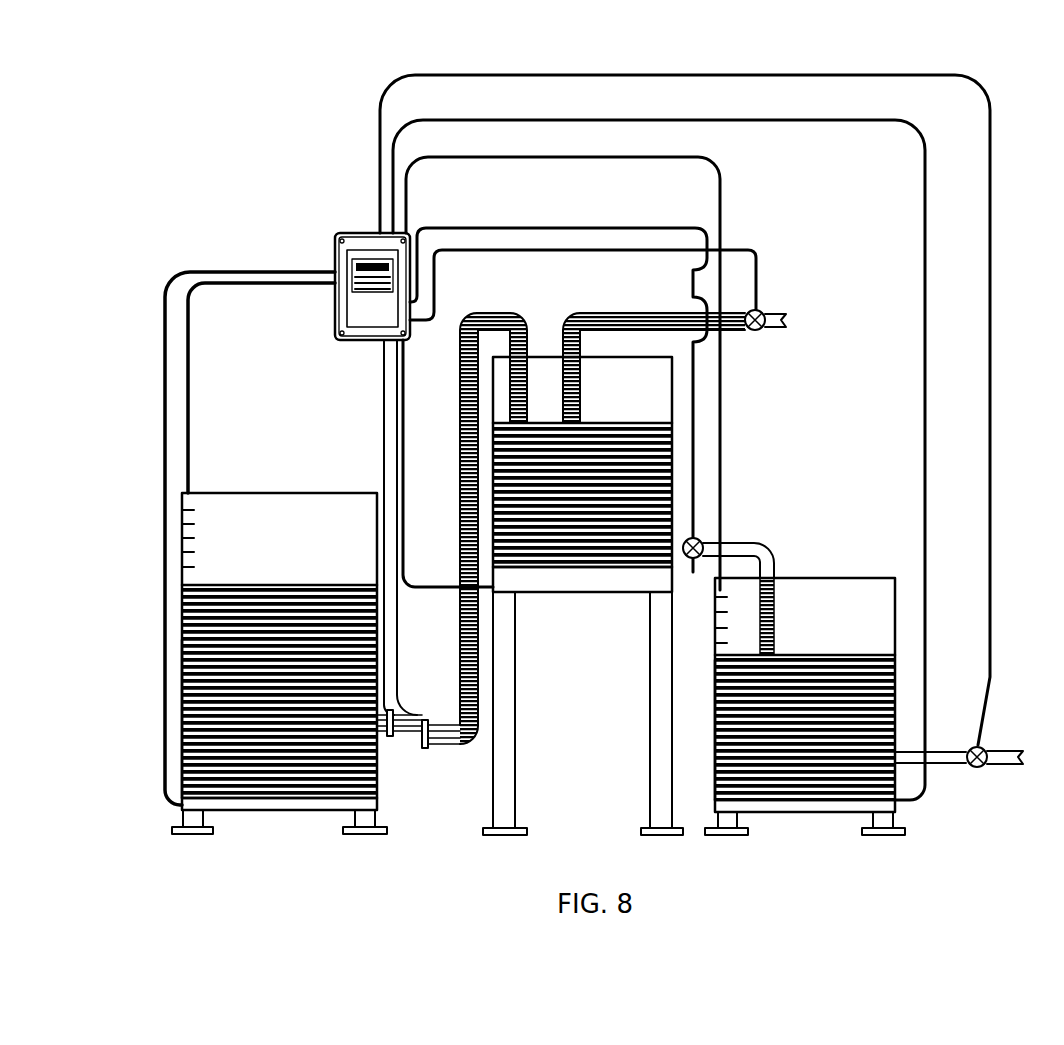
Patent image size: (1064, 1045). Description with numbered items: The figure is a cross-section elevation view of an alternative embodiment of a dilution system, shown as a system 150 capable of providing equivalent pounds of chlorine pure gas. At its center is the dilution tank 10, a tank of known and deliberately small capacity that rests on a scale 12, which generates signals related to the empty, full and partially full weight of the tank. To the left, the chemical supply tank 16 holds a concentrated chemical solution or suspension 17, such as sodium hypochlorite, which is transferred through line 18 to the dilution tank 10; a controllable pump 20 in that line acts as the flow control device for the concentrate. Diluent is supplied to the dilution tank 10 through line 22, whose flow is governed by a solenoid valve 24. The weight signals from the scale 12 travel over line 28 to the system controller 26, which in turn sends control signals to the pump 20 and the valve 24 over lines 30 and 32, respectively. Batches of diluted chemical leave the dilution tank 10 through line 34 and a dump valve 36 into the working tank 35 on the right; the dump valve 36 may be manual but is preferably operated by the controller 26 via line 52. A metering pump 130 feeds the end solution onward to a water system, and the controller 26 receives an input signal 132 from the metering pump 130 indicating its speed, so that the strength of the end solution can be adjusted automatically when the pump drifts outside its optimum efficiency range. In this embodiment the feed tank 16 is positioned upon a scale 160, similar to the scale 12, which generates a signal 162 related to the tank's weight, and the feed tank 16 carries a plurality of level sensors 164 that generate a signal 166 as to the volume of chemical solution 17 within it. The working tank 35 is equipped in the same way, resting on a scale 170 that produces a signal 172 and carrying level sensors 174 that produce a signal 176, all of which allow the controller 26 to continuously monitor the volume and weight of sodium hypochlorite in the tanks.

The dilution tank 10 is at (673, 460).
The scale 12 is at (641, 576).
The chemical supply tank 16 is at (344, 492).
The concentrated chemical solution or suspension 17 is at (280, 795).
The line 18 is at (460, 430).
The controllable pump 20 is at (410, 742).
The line 22 is at (600, 313).
The solenoid valve 24 is at (760, 331).
The system controller 26 is at (352, 233).
The line 28 is at (404, 520).
The line 30 is at (383, 447).
The line 32 is at (593, 250).
The line 34 is at (774, 558).
The working tank 35 is at (872, 613).
The dump valve 36 is at (693, 559).
The line 52 is at (493, 228).
The metering pump 130 is at (983, 746).
The input signal 132 is at (993, 345).
The system 150 is at (436, 822).
The scale 160 is at (300, 820).
The signal 162 is at (164, 425).
The level sensors 164 is at (182, 722).
The signal 166 is at (190, 405).
The scale 170 is at (807, 813).
The signal 172 is at (925, 440).
The level sensors 174 is at (715, 729).
The signal 176 is at (722, 189).